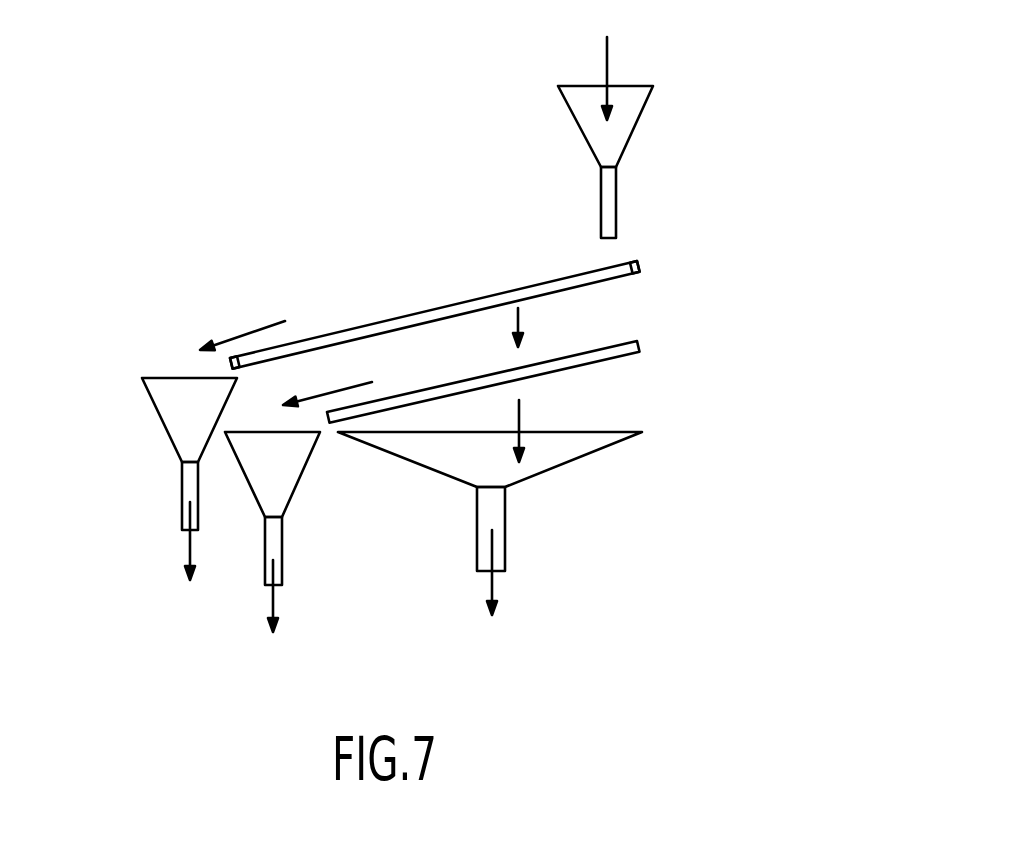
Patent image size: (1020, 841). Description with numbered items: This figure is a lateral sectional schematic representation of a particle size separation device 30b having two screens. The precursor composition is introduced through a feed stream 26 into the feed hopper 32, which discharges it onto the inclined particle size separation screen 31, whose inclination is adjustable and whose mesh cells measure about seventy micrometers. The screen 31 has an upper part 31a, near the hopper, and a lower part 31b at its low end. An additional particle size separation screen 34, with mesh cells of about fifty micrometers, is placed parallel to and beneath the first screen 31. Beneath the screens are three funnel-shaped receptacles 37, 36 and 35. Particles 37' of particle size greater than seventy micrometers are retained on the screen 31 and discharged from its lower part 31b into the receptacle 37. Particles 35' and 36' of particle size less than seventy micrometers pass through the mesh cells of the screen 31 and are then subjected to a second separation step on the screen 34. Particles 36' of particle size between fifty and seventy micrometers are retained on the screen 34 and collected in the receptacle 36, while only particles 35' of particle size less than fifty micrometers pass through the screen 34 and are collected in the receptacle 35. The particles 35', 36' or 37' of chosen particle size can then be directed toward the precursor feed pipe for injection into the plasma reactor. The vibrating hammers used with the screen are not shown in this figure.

The feed stream of material 26 is at (607, 67).
The feed hopper 32 is at (627, 122).
The particle size separation screen 31 is at (452, 308).
The upper part 31a is at (633, 270).
The lower part 31b is at (242, 362).
The particle size separation device 30b is at (657, 334).
The additional particle size separation screen 34 is at (623, 350).
The receptacle 35 is at (490, 501).
The receptacle 36 is at (292, 508).
The receptacle 37 is at (168, 454).
The particles 35' is at (545, 421).
The particles 36' is at (320, 450).
The particles 37' is at (201, 440).